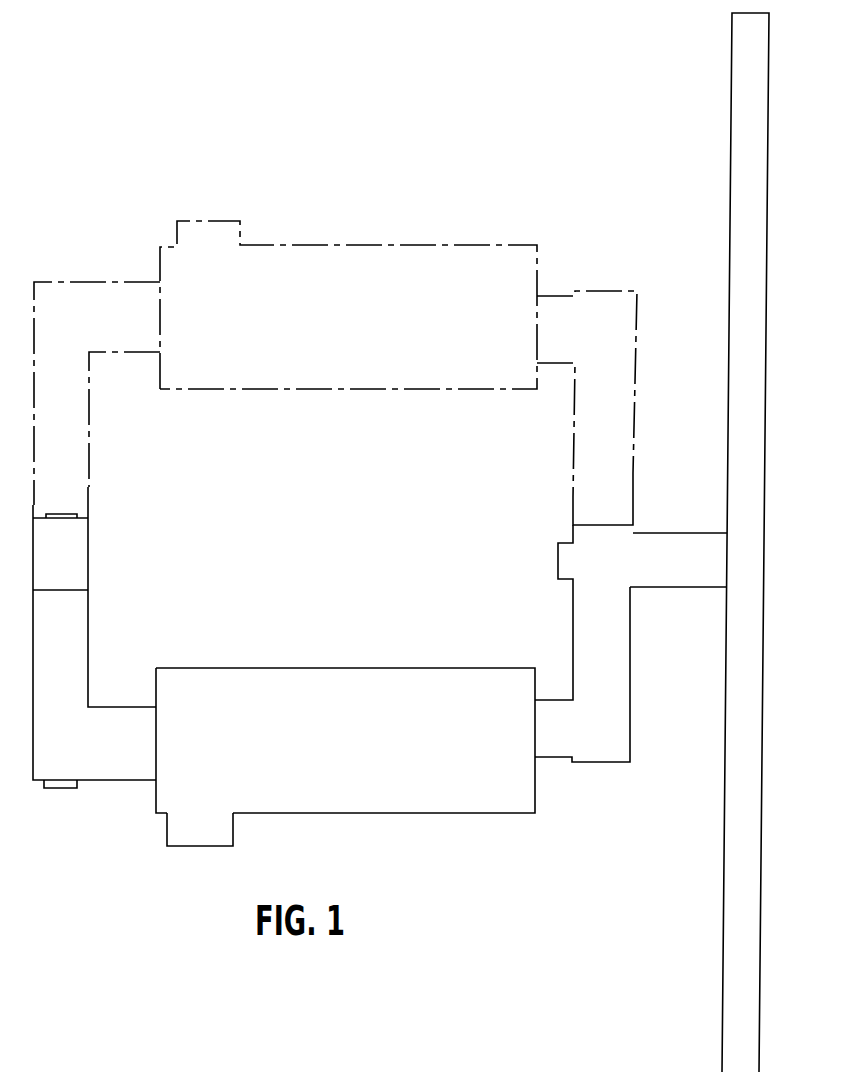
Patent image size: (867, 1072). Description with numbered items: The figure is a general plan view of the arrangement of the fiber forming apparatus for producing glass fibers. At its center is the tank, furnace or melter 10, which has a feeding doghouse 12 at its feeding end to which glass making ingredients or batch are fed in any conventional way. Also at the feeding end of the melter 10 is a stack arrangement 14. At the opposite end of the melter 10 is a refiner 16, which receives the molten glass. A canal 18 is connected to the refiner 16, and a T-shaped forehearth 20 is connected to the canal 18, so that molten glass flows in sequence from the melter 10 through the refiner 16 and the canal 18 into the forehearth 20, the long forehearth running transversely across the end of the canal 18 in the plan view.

The melter 10 is at (335, 668).
The feeding doghouse 12 is at (234, 830).
The stack arrangement 14 is at (90, 625).
The refiner 16 is at (633, 733).
The canal 18 is at (694, 531).
The forehearth 20 is at (763, 659).